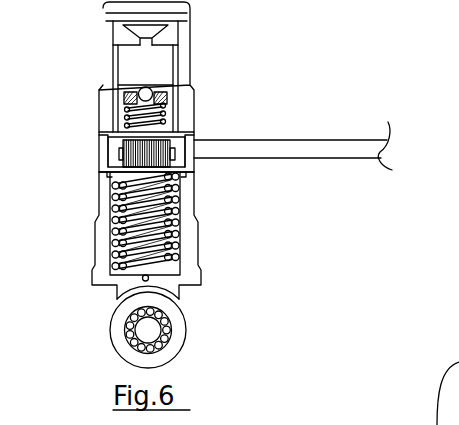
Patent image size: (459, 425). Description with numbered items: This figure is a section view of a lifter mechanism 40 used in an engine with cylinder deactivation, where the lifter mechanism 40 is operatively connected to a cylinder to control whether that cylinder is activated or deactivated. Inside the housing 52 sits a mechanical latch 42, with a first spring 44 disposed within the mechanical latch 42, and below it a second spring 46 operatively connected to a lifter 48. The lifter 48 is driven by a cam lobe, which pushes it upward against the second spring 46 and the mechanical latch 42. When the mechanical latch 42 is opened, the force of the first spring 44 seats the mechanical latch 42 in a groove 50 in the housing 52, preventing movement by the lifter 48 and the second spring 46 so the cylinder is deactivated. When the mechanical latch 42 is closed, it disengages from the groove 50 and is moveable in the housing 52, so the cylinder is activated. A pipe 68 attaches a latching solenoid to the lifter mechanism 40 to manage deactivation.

The lifter mechanism 40 is at (218, 42).
The mechanical latch 42 is at (180, 148).
The first spring 44 is at (162, 143).
The second spring 46 is at (180, 220).
The lifter 48 is at (177, 323).
The groove 50 is at (108, 163).
The housing 52 is at (106, 55).
The pipe 68 is at (336, 143).